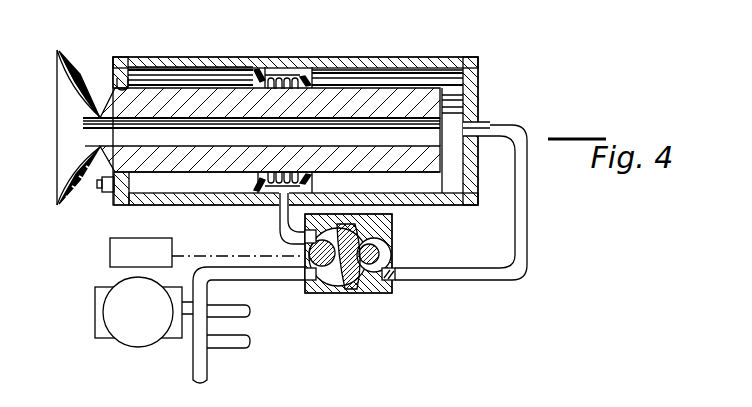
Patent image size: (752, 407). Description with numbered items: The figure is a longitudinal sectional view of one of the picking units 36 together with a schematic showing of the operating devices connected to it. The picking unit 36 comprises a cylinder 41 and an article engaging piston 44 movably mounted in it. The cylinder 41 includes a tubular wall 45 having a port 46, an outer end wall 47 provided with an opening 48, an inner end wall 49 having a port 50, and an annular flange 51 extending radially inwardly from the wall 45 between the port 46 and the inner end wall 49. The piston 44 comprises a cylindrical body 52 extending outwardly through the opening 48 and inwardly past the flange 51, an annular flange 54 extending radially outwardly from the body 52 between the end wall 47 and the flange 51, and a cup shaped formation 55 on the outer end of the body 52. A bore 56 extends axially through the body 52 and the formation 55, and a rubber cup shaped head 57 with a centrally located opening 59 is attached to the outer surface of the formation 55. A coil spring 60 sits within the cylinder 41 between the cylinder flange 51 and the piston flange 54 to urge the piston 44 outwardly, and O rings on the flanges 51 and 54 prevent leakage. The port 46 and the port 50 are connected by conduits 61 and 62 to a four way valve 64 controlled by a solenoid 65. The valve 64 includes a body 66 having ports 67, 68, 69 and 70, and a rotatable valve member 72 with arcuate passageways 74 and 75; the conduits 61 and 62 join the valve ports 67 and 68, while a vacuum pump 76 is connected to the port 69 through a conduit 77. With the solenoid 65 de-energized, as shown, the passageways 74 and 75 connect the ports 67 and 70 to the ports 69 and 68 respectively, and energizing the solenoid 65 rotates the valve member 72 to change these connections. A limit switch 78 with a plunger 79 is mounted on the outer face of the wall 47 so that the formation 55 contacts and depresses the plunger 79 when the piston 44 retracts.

The picking unit 36 is at (113, 38).
The cylinder 41 is at (200, 57).
The article engaging piston 44 is at (203, 174).
The tubular wall 45 is at (380, 68).
The port 46 is at (280, 209).
The outer end wall 47 is at (120, 75).
The opening 48 is at (128, 88).
The inner end wall 49 is at (472, 88).
The port 50 is at (483, 125).
The annular flange 51 is at (308, 77).
The cylindrical body 52 is at (393, 105).
The annular flange 54 is at (243, 70).
The cup shaped formation 55 is at (90, 190).
The bore 56 is at (427, 136).
The rubber cup shaped head 57 is at (67, 85).
The opening 59 is at (83, 122).
The coil spring 60 is at (277, 78).
The conduit 61 is at (280, 224).
The conduit 62 is at (467, 282).
The four way valve 64 is at (353, 292).
The solenoid 65 is at (114, 262).
The valve body 66 is at (364, 295).
The valve port 67 is at (304, 246).
The valve port 68 is at (403, 276).
The valve port 69 is at (305, 273).
The valve port 70 is at (390, 232).
The rotatable valve member 72 is at (348, 289).
The arcuate passageway 74 is at (327, 275).
The arcuate passageway 75 is at (365, 256).
The vacuum pump 76 is at (130, 336).
The conduit 77 is at (232, 280).
The limit switch 78 is at (116, 190).
The plunger 79 is at (99, 194).